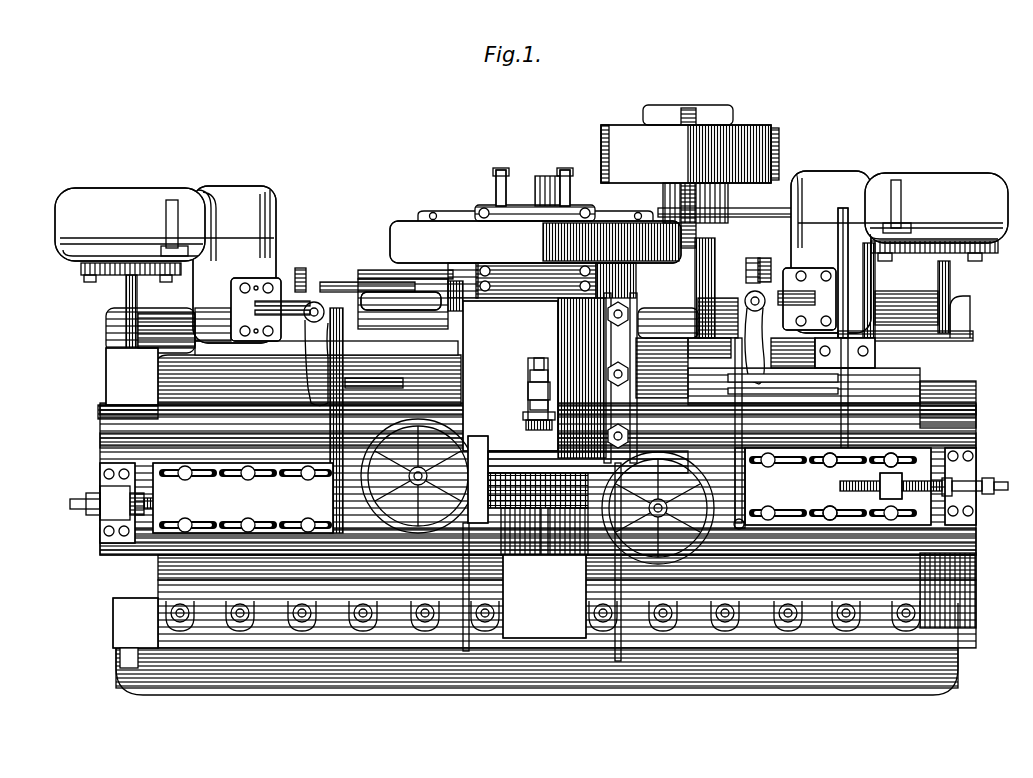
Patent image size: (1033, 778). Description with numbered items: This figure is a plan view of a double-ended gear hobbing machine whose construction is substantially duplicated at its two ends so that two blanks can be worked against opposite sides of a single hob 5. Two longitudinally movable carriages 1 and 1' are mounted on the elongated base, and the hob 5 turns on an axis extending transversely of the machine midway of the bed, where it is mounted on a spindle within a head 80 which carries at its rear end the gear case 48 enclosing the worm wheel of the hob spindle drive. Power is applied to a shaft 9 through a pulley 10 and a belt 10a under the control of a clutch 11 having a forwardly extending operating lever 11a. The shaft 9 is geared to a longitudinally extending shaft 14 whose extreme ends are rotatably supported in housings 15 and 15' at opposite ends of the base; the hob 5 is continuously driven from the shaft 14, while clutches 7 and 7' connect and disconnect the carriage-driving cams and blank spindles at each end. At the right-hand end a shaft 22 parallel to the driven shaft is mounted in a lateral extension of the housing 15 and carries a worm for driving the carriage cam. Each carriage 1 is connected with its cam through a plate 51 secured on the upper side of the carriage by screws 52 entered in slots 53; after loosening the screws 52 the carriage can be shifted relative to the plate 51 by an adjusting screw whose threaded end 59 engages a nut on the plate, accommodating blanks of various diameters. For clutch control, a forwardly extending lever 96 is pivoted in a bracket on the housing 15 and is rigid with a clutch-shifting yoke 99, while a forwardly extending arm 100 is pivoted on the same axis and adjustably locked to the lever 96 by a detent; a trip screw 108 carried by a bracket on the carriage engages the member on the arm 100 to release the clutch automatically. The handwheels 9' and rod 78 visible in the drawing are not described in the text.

The carriage 1 is at (873, 472).
The carriage 1' is at (189, 492).
The hob 5 is at (510, 462).
The clutch 7 is at (750, 216).
The clutch 7' is at (307, 258).
The shaft 9 is at (636, 518).
The handwheel 9' is at (448, 512).
The pulley 10 is at (730, 122).
The belt 10a is at (768, 128).
The clutch 11 is at (655, 195).
The operating lever 11a is at (840, 400).
The longitudinally extending shaft 14 is at (341, 272).
The housing 15 is at (903, 201).
The housing 15' is at (165, 246).
The shaft 22 is at (942, 272).
The gear case 48 is at (494, 244).
The plate 51 is at (814, 505).
The screws 52 is at (888, 445).
The slots 53 is at (905, 450).
The threaded end 59 is at (940, 475).
The rod 78 is at (458, 608).
The head 80 is at (534, 378).
The lever 96 is at (736, 476).
The clutch-shifting yoke 99 is at (766, 268).
The arm 100 is at (751, 350).
The screw 108 is at (670, 355).